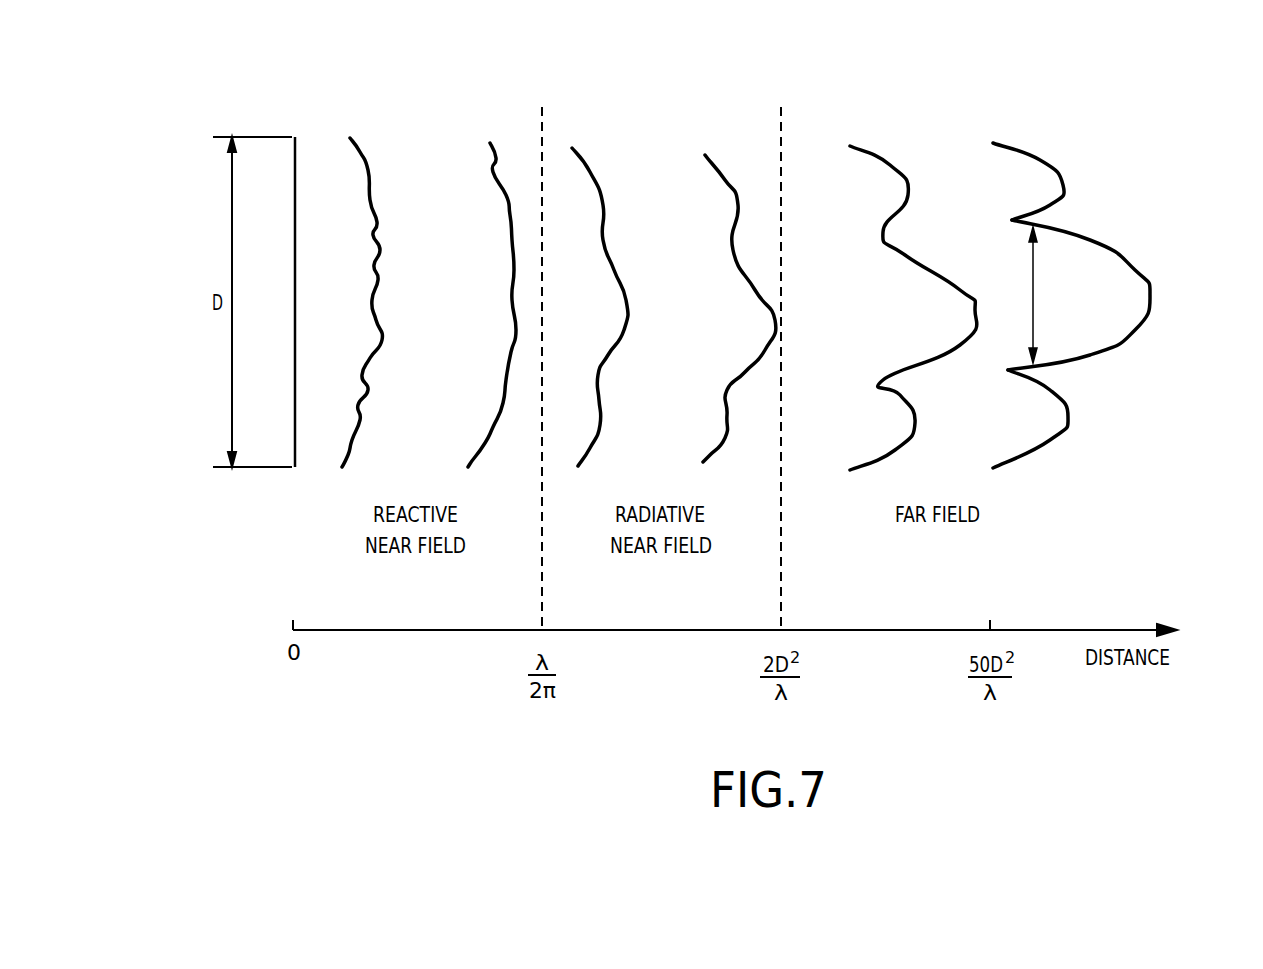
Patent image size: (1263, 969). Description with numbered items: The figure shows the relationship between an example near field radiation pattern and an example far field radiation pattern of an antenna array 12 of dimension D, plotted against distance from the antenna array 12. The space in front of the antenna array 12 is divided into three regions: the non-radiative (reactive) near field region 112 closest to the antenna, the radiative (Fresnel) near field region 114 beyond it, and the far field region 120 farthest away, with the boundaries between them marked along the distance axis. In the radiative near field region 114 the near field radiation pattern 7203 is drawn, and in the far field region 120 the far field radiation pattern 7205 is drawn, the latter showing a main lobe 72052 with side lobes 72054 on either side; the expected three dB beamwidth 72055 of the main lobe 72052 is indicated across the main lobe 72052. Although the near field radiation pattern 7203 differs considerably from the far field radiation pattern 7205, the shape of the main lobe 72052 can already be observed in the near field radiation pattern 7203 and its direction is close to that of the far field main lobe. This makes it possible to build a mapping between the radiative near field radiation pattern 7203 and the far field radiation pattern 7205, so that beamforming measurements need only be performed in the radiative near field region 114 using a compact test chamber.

The antenna array 12 is at (292, 133).
The non-radiative (reactive) near field region 112 is at (441, 89).
The radiative (Fresnel) near field region 114 is at (701, 89).
The far field region 120 is at (1012, 89).
The near field radiation pattern 7203 is at (606, 200).
The far field radiation pattern 7205 is at (1075, 228).
The main lobe 72052 is at (1150, 295).
The side lobes 72054 is at (1060, 442).
The 3 dB beamwidth 72055 is at (1064, 295).